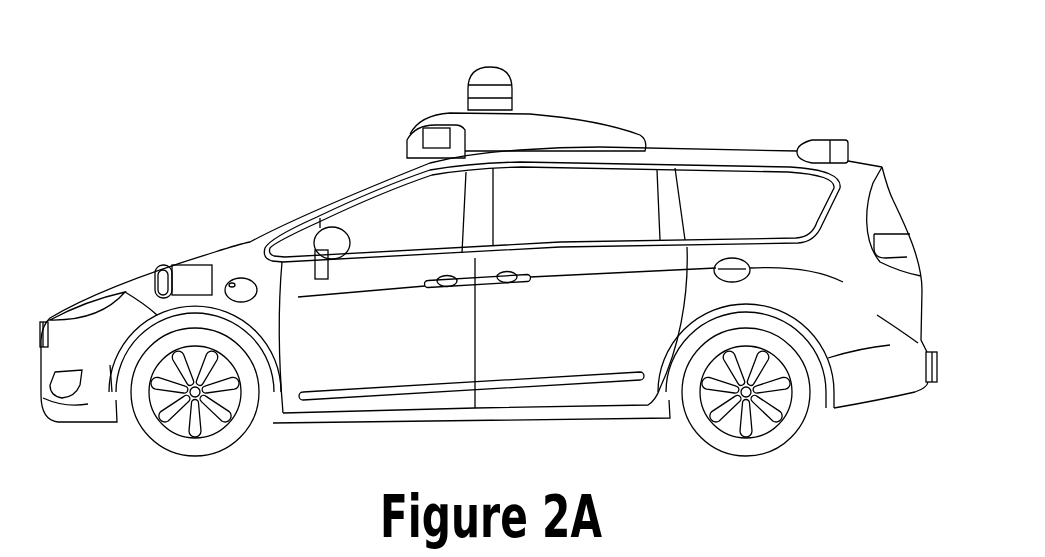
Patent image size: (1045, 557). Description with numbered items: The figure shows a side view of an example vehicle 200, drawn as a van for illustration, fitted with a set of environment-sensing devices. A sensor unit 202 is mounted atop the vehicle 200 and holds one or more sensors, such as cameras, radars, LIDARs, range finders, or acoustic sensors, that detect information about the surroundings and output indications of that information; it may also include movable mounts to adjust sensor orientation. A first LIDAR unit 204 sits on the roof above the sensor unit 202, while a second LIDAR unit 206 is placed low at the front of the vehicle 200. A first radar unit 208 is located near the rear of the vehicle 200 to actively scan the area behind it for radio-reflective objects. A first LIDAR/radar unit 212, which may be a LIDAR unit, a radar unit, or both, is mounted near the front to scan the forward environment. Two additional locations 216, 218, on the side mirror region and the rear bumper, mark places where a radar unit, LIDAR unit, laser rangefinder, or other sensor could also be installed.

The vehicle 200 is at (176, 100).
The sensor unit 202 is at (406, 140).
The first LIDAR unit 204 is at (467, 90).
The second LIDAR unit 206 is at (43, 321).
The first radar unit 208 is at (850, 141).
The first LIDAR/radar unit 212 is at (175, 266).
The additional location 216 is at (333, 245).
The additional location 218 is at (928, 383).